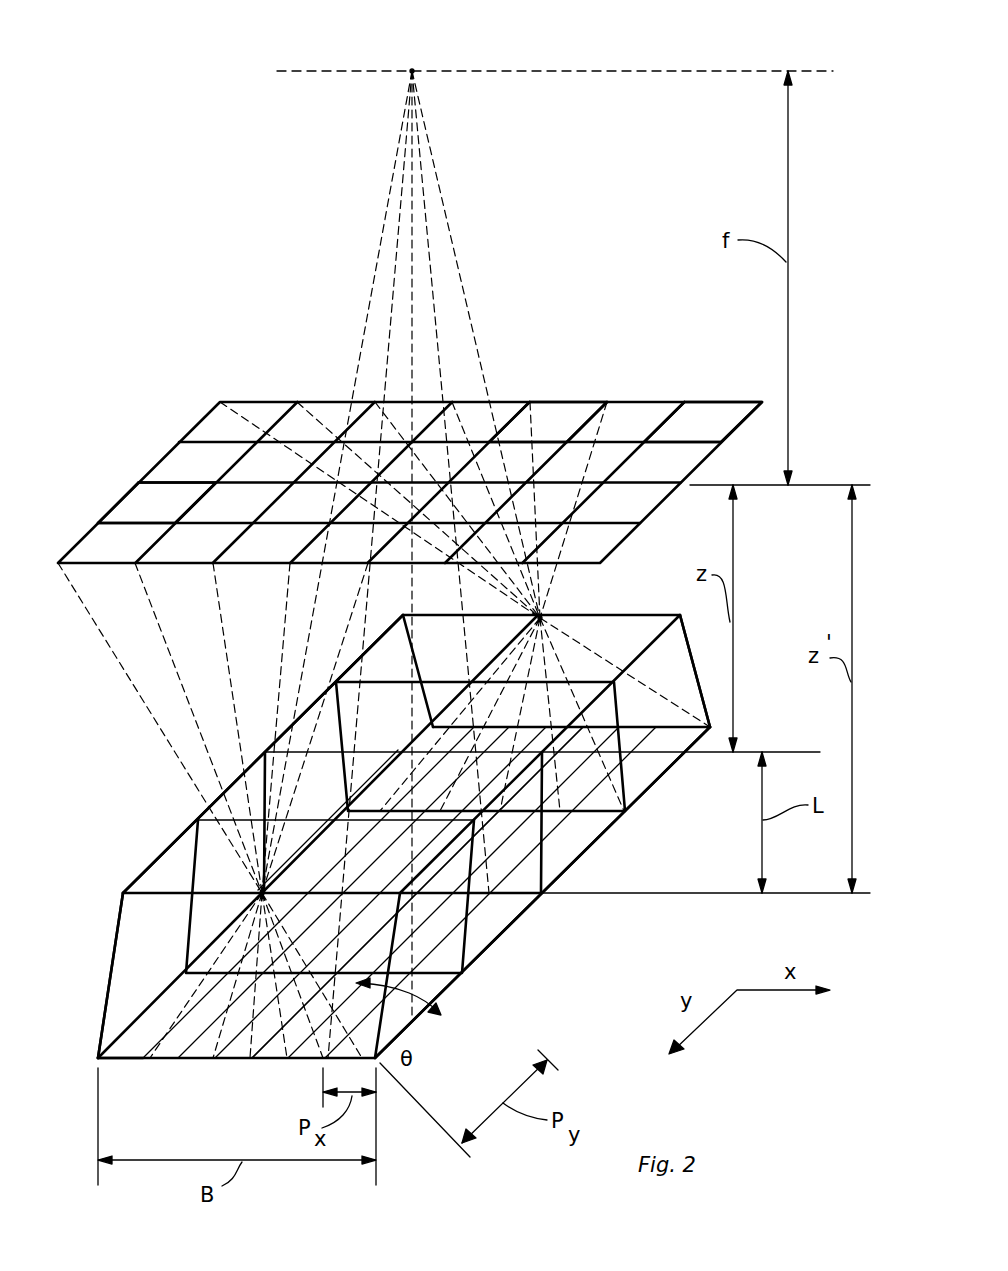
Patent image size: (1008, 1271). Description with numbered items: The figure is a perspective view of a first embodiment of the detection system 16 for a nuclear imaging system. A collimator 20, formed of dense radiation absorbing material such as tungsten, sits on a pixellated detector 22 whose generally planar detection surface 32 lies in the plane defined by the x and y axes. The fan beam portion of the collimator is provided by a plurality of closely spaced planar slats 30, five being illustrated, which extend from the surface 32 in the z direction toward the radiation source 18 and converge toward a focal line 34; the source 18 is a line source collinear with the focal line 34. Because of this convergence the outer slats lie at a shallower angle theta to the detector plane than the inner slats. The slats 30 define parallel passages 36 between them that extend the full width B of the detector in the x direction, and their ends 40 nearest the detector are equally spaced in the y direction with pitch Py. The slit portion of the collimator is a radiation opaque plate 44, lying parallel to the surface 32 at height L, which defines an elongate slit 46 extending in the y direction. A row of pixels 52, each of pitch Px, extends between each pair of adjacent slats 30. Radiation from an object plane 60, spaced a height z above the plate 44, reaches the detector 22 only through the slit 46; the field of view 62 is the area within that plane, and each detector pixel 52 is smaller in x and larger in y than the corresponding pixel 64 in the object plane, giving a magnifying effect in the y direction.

The detection system 16 is at (93, 466).
The radiation source 18 is at (407, 66).
The collimator 20 is at (166, 863).
The detector 22 is at (88, 1048).
The slats 30 is at (112, 962).
The detection surface 32 is at (470, 980).
The focal line 34 is at (519, 71).
The passages 36 is at (505, 912).
The ends of the slats 40 is at (217, 964).
The plate 44 is at (148, 844).
The slit 46 is at (545, 655).
The pixels 52 is at (119, 1064).
The object plane 60 is at (168, 468).
The field of view 62 is at (564, 410).
The pixel in the object plane 64 is at (719, 410).